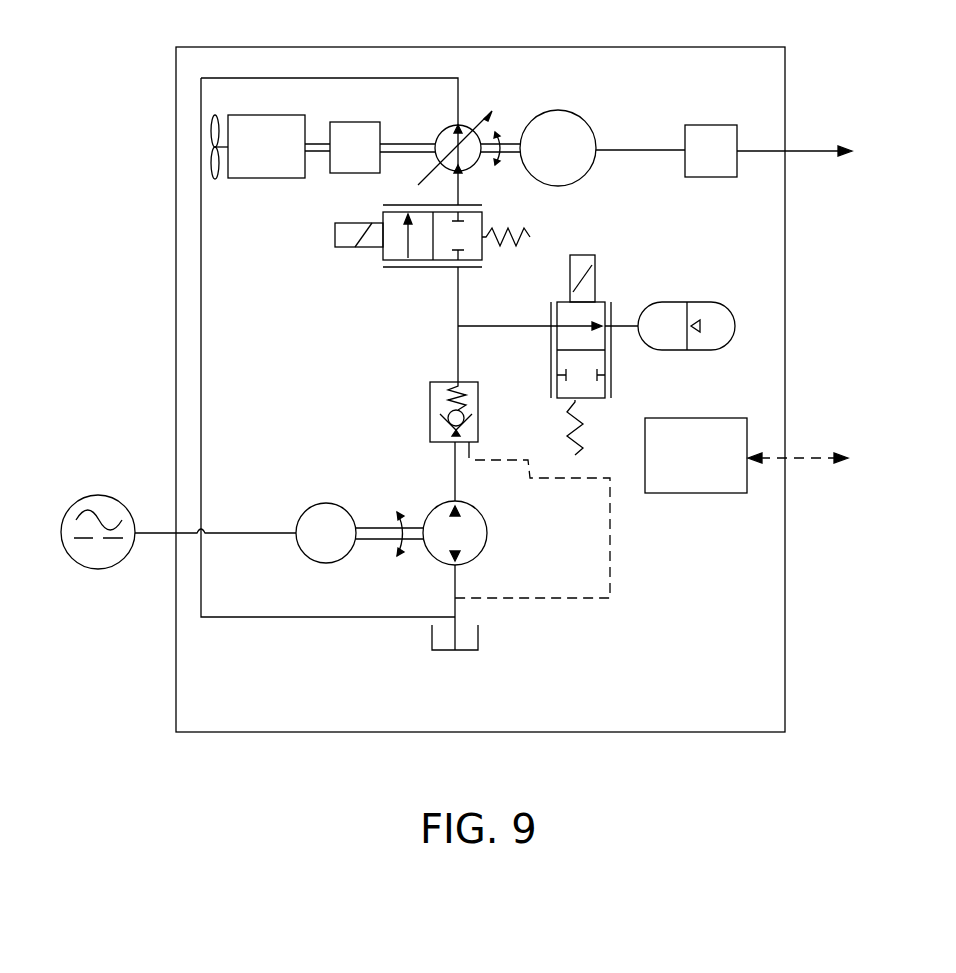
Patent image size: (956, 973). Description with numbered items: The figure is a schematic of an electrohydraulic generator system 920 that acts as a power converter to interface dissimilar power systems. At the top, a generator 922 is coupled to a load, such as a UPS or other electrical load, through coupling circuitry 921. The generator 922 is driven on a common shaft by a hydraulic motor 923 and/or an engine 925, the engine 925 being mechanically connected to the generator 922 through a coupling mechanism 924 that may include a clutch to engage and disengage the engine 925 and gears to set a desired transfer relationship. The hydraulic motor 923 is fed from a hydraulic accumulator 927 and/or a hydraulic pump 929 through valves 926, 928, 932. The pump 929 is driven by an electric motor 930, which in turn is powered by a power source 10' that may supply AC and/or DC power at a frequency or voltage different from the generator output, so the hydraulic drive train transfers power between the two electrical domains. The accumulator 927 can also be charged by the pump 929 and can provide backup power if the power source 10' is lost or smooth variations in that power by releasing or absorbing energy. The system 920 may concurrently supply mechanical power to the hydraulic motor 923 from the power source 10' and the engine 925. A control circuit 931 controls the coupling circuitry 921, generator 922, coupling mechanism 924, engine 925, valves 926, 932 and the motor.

The electrohydraulic generator system 920 is at (483, 47).
The coupling circuitry 921 is at (710, 125).
The generator 922 is at (560, 110).
The hydraulic motor 923 is at (470, 168).
The coupling mechanism 924 is at (355, 122).
The engine 925 is at (267, 115).
The valve 926 is at (335, 235).
The hydraulic accumulator 927 is at (680, 302).
The valve 928 is at (430, 414).
The hydraulic pump 929 is at (487, 538).
The electric motor 930 is at (323, 503).
The control circuit 931 is at (697, 418).
The valve 932 is at (550, 340).
The power source 10' is at (83, 514).